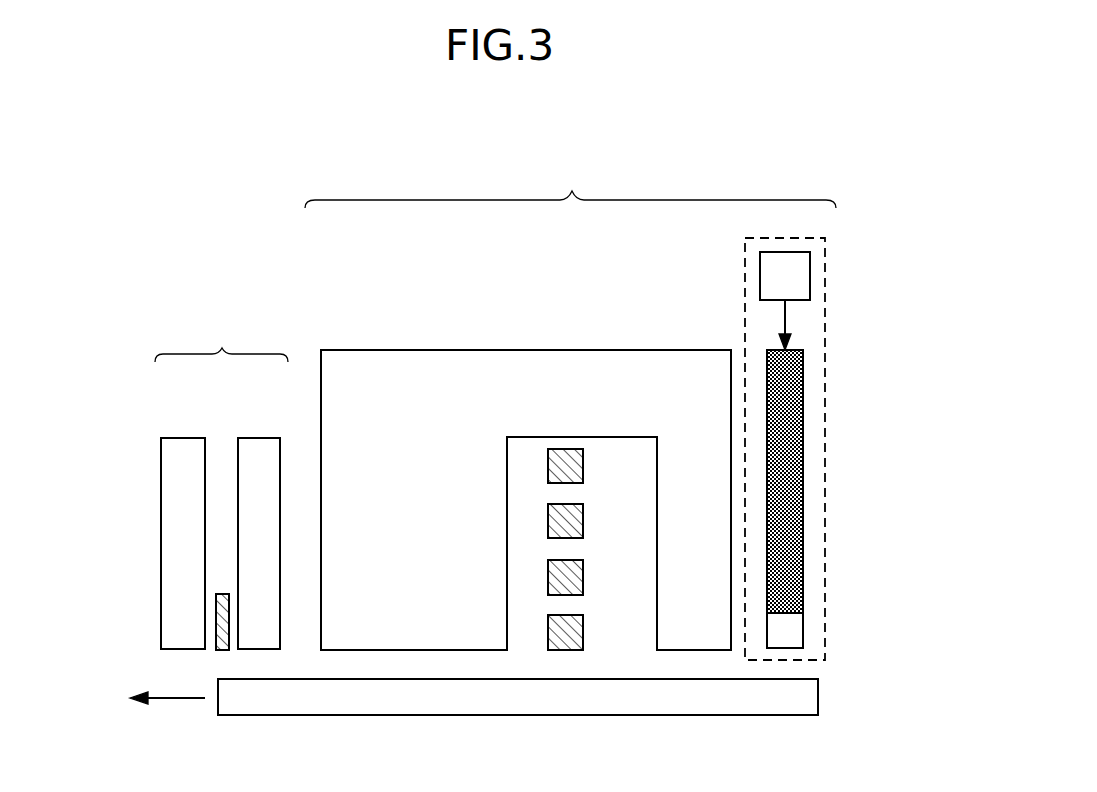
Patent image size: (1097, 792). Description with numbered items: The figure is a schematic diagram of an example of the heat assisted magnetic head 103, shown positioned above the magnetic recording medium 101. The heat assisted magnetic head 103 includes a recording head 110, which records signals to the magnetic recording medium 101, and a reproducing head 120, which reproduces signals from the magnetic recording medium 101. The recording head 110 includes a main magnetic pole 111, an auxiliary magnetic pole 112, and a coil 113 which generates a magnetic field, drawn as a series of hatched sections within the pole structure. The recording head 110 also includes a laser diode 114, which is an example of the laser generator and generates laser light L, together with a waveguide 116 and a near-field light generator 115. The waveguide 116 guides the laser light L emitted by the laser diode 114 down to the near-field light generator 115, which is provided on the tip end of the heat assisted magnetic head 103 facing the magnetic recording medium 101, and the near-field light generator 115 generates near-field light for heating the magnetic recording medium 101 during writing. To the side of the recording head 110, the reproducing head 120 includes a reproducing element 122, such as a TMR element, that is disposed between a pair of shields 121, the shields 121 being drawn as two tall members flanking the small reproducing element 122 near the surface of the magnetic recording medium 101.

The heat assisted magnetic head 103 is at (888, 160).
The recording head 110 is at (570, 186).
The main magnetic pole 111 is at (718, 575).
The auxiliary magnetic pole 112 is at (478, 557).
The coil 113 is at (567, 467).
The laser diode 114 is at (785, 282).
The laser light L is at (787, 320).
The waveguide 116 is at (785, 393).
The near-field light generator 115 is at (785, 630).
The magnetic recording medium 101 is at (805, 697).
The reproducing head 120 is at (221, 483).
The shields 121 is at (260, 453).
The reproducing element 122 is at (222, 640).